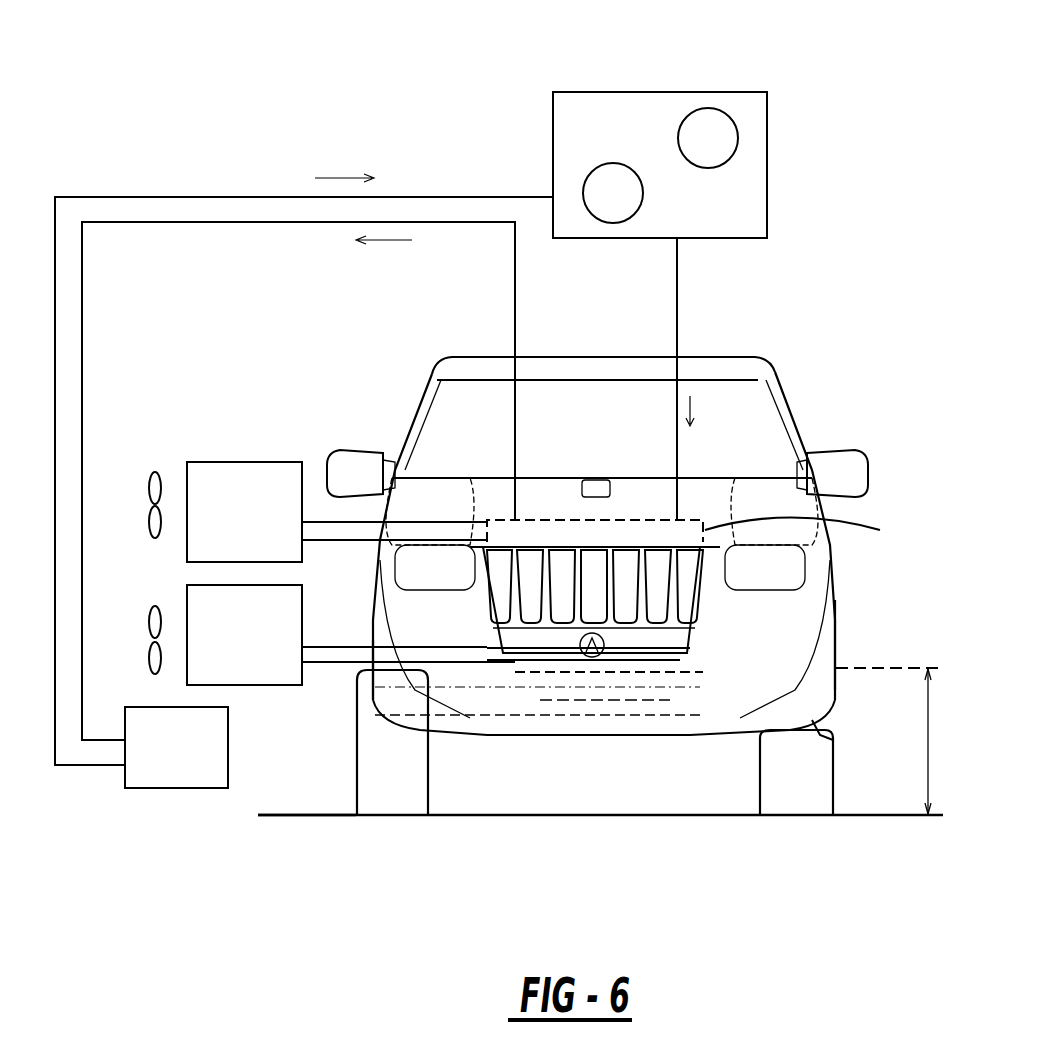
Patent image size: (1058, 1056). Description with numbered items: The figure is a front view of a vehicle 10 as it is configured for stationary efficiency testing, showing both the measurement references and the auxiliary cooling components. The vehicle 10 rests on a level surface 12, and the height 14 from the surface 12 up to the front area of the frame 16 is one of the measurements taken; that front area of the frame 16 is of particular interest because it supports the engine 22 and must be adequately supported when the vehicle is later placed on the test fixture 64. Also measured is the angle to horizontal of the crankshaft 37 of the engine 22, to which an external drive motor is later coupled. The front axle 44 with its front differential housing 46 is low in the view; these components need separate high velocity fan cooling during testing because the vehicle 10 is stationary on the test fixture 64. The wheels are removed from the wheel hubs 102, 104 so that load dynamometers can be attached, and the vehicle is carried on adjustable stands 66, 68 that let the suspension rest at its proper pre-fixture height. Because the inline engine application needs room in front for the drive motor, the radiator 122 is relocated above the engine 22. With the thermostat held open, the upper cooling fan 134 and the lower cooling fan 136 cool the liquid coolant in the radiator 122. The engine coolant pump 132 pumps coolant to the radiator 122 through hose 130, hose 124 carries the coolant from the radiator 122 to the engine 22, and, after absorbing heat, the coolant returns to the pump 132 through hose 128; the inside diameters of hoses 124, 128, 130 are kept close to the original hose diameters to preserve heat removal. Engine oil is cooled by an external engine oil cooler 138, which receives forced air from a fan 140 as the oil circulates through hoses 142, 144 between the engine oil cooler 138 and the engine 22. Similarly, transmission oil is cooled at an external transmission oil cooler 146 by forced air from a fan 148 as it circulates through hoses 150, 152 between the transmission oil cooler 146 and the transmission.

The vehicle 10 is at (772, 397).
The level surface 12 is at (896, 815).
The height 14 is at (932, 758).
The front area of the frame 16 is at (840, 632).
The engine 22 is at (803, 536).
The crankshaft 37 is at (593, 660).
The front axle 44 is at (505, 725).
The front differential housing 46 is at (615, 668).
The test fixture 64 is at (276, 796).
The right front tire 66 is at (760, 746).
The vehicle stand 68 is at (350, 780).
The wheel hub 102 is at (835, 738).
The wheel hub 104 is at (372, 705).
The radiator 122 is at (655, 92).
The hose 124 is at (677, 312).
The hose 128 is at (212, 222).
The hose 130 is at (245, 197).
The engine coolant pump 132 is at (175, 788).
The upper cooling fan 134 is at (738, 140).
The engine cylinder 136 is at (592, 177).
The engine oil cooler 138 is at (235, 462).
The fan 140 is at (148, 486).
The hose 142 is at (322, 522).
The hose 144 is at (322, 540).
The transmission oil cooler 146 is at (187, 585).
The fan 148 is at (148, 624).
The hose 150 is at (326, 647).
The hose 152 is at (328, 662).